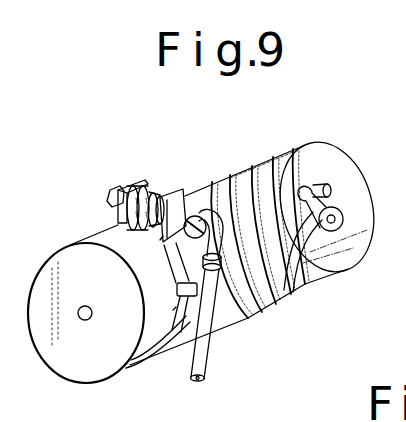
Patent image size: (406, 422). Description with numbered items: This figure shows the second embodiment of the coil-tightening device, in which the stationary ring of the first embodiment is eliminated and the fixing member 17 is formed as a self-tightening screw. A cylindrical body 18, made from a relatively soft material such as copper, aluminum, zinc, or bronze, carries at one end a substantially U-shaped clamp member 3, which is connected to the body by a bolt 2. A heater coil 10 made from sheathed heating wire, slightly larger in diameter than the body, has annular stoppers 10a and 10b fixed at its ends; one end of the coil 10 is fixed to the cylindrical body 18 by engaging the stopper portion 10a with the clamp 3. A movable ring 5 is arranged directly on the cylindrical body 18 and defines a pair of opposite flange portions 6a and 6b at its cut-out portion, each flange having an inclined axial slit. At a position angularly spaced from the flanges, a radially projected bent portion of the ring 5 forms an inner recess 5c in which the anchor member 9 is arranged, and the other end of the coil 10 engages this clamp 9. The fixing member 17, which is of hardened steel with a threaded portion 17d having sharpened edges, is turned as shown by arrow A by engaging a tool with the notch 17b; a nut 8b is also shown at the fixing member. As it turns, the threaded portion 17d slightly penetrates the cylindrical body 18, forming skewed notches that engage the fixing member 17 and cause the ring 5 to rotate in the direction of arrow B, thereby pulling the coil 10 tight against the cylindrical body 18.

The bolt 2 is at (343, 213).
The clamp member 3 is at (303, 190).
The movable ring 5 is at (142, 367).
The inner recess 5c is at (190, 297).
The flange portion 6a is at (131, 183).
The flange portion 6b is at (180, 195).
The nut 8b is at (111, 199).
The anchor member 9 is at (180, 285).
The heater coil 10 is at (205, 338).
The annular stopper 10a is at (328, 192).
The annular stopper 10b is at (217, 268).
The fixing member 17 is at (157, 178).
The notch 17b is at (200, 202).
The threaded portion 17d is at (163, 195).
The cylindrical body 18 is at (68, 270).
The arrow A is at (161, 238).
The arrow B is at (174, 309).